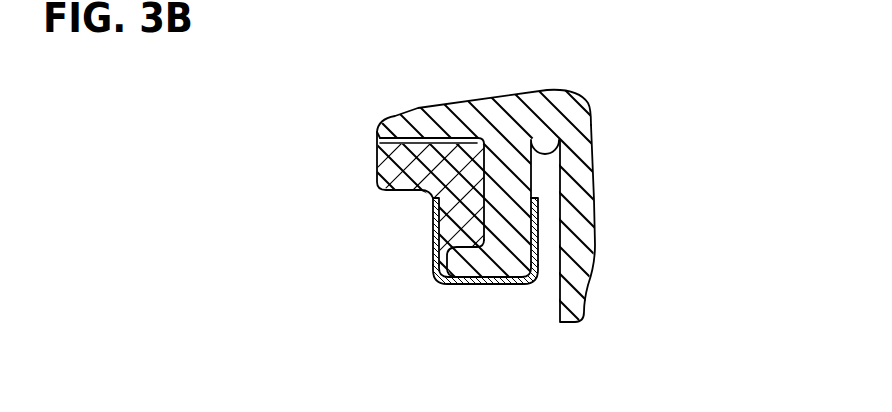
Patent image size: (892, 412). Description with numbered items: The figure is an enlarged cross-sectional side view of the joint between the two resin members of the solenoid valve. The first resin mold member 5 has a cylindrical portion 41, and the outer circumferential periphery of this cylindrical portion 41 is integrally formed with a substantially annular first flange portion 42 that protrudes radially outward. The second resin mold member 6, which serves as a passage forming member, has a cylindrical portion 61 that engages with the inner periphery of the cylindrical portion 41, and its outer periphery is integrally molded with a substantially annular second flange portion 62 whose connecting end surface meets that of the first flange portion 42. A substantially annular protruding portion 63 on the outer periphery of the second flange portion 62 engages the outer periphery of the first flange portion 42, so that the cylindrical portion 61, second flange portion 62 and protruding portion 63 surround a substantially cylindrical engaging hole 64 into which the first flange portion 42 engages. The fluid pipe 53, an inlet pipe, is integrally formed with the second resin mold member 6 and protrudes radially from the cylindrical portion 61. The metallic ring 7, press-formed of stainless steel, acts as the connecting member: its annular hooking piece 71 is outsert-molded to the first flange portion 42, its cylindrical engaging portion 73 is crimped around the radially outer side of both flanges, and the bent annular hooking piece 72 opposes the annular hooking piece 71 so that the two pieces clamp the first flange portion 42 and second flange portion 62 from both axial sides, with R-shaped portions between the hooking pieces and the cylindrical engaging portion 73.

The first resin mold member 5 is at (512, 206).
The cylindrical portion 41 is at (393, 163).
The first flange portion 42 is at (457, 235).
The fluid pipe 53 is at (578, 213).
The second resin mold member 6 is at (521, 206).
The cylindrical portion 61 is at (452, 118).
The second flange portion 62 is at (507, 230).
The protruding portion 63 is at (460, 262).
The engaging hole 64 is at (482, 160).
The metallic ring 7 is at (452, 206).
The annular hooking piece 71 is at (432, 222).
The annular hooking piece 72 is at (538, 238).
The cylindrical engaging portion 73 is at (478, 282).